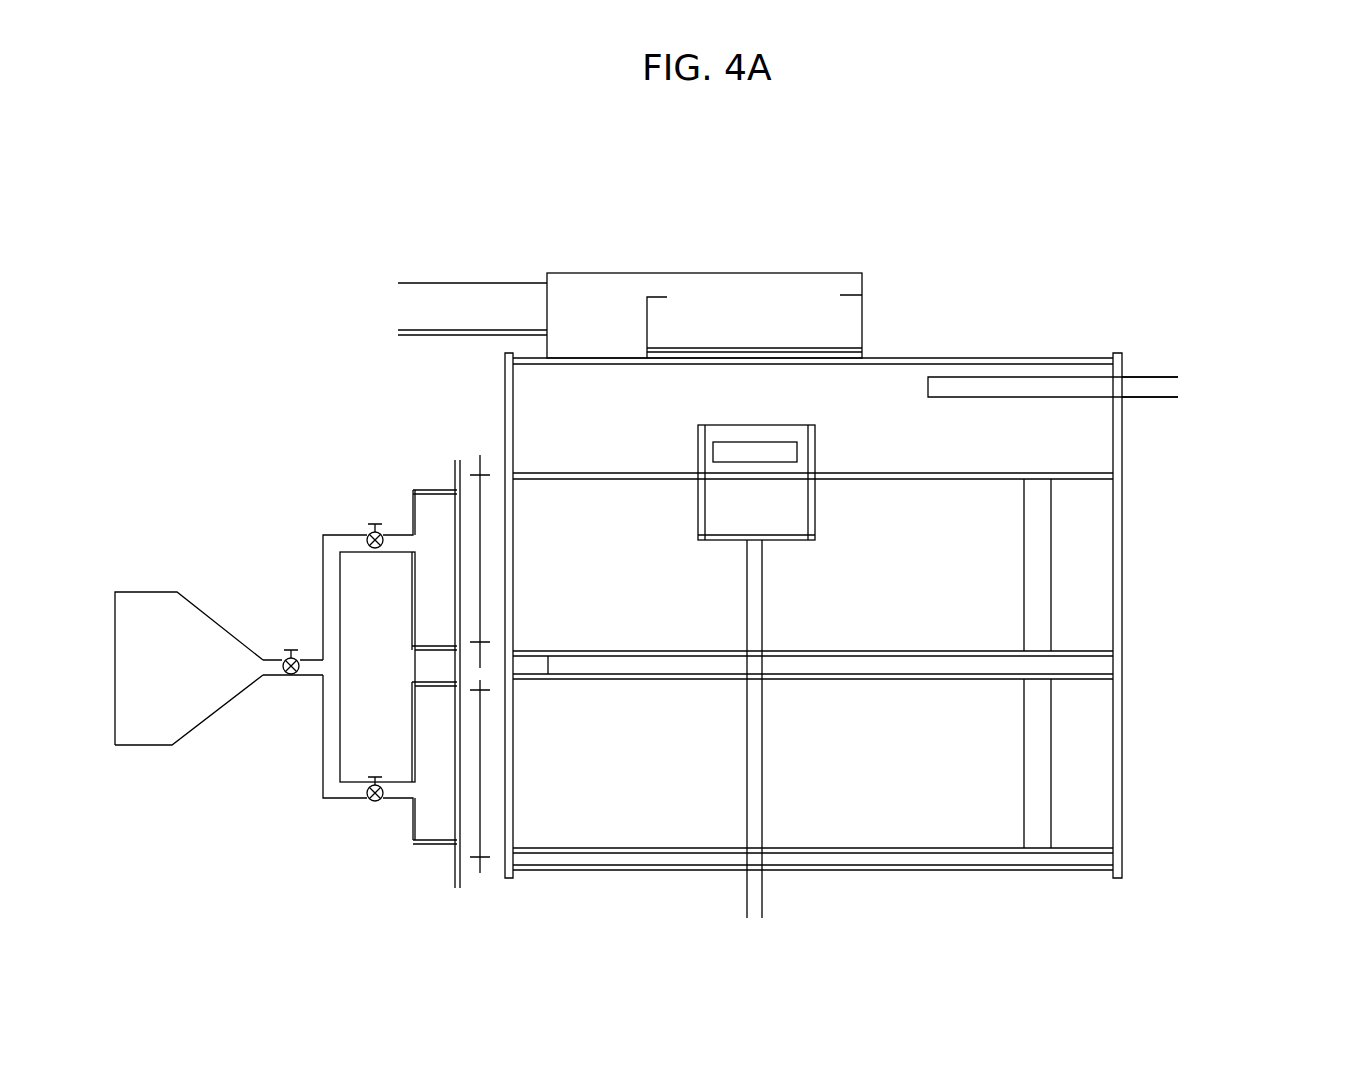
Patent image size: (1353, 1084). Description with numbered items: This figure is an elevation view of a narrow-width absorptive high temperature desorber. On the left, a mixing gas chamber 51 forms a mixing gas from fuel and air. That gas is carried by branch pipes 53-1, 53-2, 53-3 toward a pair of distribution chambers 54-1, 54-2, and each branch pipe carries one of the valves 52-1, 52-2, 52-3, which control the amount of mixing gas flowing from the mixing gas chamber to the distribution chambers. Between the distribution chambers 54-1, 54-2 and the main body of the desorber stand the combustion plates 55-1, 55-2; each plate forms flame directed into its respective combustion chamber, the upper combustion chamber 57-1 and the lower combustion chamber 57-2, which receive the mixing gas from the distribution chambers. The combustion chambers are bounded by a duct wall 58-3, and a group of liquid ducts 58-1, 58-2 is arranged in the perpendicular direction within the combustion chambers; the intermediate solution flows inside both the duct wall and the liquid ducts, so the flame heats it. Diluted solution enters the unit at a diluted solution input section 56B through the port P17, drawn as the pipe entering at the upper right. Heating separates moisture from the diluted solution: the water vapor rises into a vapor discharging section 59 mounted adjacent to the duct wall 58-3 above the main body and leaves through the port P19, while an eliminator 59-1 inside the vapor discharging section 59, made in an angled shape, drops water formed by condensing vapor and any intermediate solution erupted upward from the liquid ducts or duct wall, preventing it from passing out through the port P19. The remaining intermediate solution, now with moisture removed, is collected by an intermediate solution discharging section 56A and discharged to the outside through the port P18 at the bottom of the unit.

The mixing gas chamber 51 is at (167, 645).
The valve 52-1 is at (283, 660).
The valve 52-2 is at (366, 537).
The valve 52-3 is at (338, 808).
The branch pipe 53-1 is at (313, 660).
The branch pipe 53-2 is at (330, 575).
The branch pipe 53-3 is at (323, 740).
The distribution chamber 54-1 is at (428, 513).
The distribution chamber 54-2 is at (430, 830).
The combustion plate 55-1 is at (475, 455).
The combustion plate 55-2 is at (478, 888).
The intermediate solution discharging section 56A is at (817, 443).
The diluted solution input section 56B is at (1000, 390).
The combustion chamber 57-1 is at (1091, 546).
The combustion chamber 57-2 is at (1077, 788).
The liquid duct 58-1 is at (1036, 613).
The liquid duct 58-2 is at (1036, 730).
The duct wall 58-3 is at (833, 393).
The vapor discharging section 59 is at (646, 273).
The eliminator 59-1 is at (661, 297).
The port P17 is at (1168, 377).
The port P18 is at (763, 908).
The port P19 is at (427, 283).